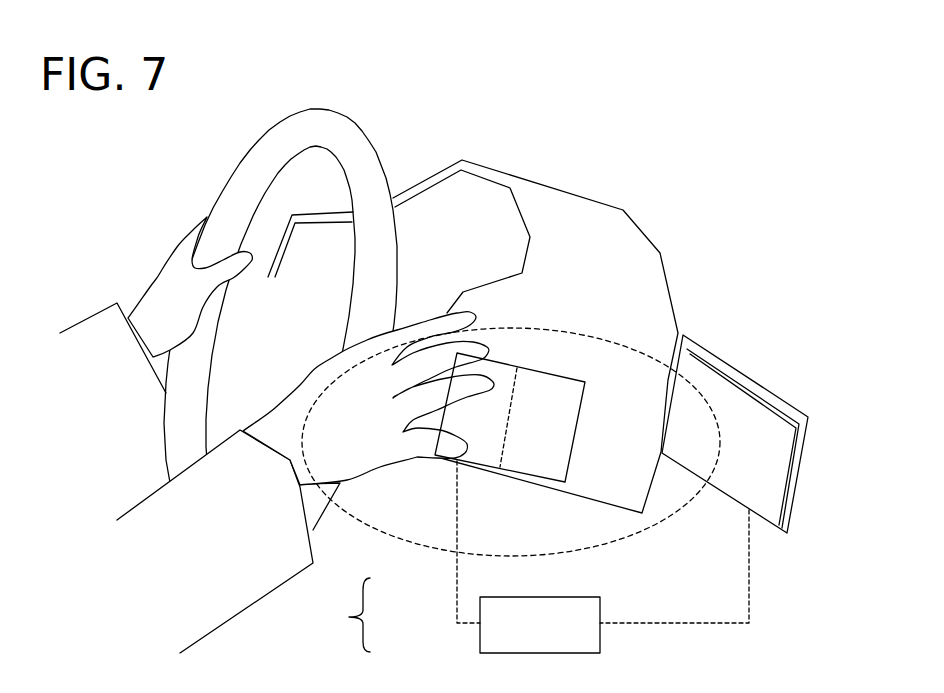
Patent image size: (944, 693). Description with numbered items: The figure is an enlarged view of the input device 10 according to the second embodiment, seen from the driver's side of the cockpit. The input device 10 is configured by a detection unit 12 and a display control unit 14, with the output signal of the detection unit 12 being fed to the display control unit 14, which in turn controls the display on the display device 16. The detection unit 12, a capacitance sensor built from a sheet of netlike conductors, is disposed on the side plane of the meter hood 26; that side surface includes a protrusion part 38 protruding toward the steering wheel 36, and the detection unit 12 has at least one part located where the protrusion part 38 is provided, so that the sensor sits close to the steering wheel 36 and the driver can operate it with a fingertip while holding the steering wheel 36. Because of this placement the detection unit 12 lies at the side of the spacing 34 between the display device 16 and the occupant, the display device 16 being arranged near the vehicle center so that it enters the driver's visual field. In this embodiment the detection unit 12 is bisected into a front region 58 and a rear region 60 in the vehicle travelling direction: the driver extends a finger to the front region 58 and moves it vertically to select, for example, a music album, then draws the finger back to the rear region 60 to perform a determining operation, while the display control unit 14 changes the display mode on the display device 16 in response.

The input device 10 is at (344, 615).
The detection unit 12 is at (458, 461).
The display control unit 14 is at (493, 641).
The display device 16 is at (752, 383).
The meter hood 26 is at (547, 191).
The spacing 34 is at (573, 332).
The steering wheel 36 is at (348, 142).
The protrusion part 38 is at (488, 296).
The front region 58 is at (577, 383).
The rear region 60 is at (508, 368).